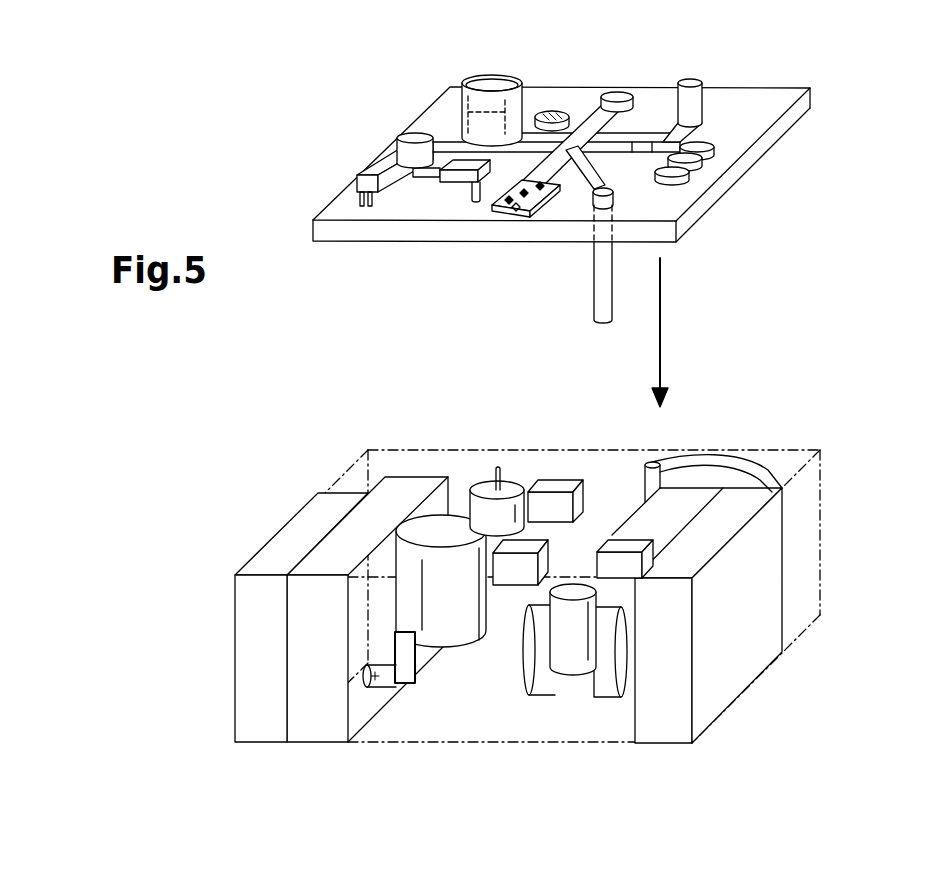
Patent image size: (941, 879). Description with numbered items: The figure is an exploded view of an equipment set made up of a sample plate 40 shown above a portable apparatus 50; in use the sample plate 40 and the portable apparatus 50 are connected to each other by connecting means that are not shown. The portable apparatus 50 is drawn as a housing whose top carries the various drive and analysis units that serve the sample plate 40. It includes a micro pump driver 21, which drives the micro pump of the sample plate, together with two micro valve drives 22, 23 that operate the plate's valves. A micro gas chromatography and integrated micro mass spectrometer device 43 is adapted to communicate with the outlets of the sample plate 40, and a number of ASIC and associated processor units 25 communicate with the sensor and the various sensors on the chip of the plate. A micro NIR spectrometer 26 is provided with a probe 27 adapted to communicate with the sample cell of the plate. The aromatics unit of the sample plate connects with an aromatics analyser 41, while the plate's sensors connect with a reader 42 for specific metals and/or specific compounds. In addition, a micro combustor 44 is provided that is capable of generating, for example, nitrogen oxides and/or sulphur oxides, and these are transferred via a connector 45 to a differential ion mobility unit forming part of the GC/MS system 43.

The sample plate 40 is at (790, 163).
The portable apparatus 50 is at (350, 438).
The micro pump driver 21 is at (486, 507).
The micro valve drive 22 is at (553, 505).
The micro valve drive 23 is at (528, 562).
The ASIC and associated processor unit 25 is at (257, 612).
The micro NIR spectrometer 26 is at (718, 667).
The probe 27 is at (658, 462).
The aromatics analyser 41 is at (580, 627).
The reader 42 is at (670, 512).
The micro gas chromatography and integrated micro mass spectrometer device 43 is at (317, 648).
The micro combustor 44 is at (448, 607).
The connector 45 is at (368, 676).